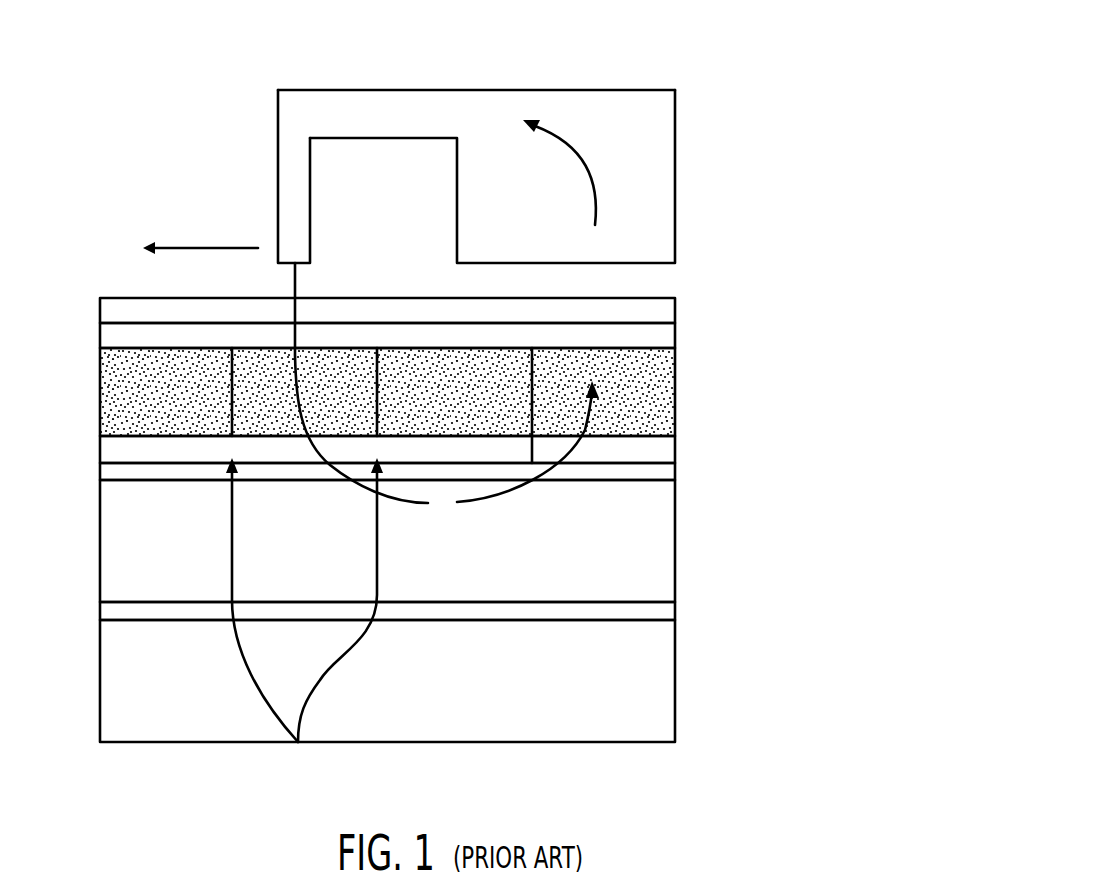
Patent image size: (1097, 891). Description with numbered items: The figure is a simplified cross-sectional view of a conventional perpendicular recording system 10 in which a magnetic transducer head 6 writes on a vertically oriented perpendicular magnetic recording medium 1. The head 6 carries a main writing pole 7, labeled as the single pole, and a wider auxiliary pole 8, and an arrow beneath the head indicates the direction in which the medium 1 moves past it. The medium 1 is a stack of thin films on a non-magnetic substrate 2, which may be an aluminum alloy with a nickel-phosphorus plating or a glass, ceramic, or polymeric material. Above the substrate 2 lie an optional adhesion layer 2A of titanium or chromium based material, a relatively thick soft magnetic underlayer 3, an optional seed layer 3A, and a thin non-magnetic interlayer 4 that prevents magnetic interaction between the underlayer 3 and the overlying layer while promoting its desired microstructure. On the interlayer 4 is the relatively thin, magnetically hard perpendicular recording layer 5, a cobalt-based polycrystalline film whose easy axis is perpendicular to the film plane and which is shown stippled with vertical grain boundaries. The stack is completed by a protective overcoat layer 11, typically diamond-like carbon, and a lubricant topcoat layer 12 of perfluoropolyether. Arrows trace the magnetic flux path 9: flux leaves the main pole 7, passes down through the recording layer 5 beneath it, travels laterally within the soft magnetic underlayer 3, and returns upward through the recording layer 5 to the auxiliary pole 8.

The perpendicular magnetic recording medium 1 is at (499, 518).
The non-magnetic substrate 2 is at (668, 688).
The adhesion layer 2A is at (668, 610).
The soft magnetic underlayer 3 is at (668, 523).
The seed layer 3A is at (668, 472).
The non-magnetic interlayer 4 is at (668, 447).
The magnetically hard perpendicular recording layer 5 is at (668, 372).
The magnetic transducer head 6 is at (352, 80).
The main writing pole 7 is at (260, 172).
The auxiliary pole 8 is at (705, 152).
The magnetic flux path 9 is at (298, 742).
The perpendicular recording system 10 is at (488, 135).
The protective overcoat layer 11 is at (668, 336).
The lubricant topcoat layer 12 is at (668, 310).